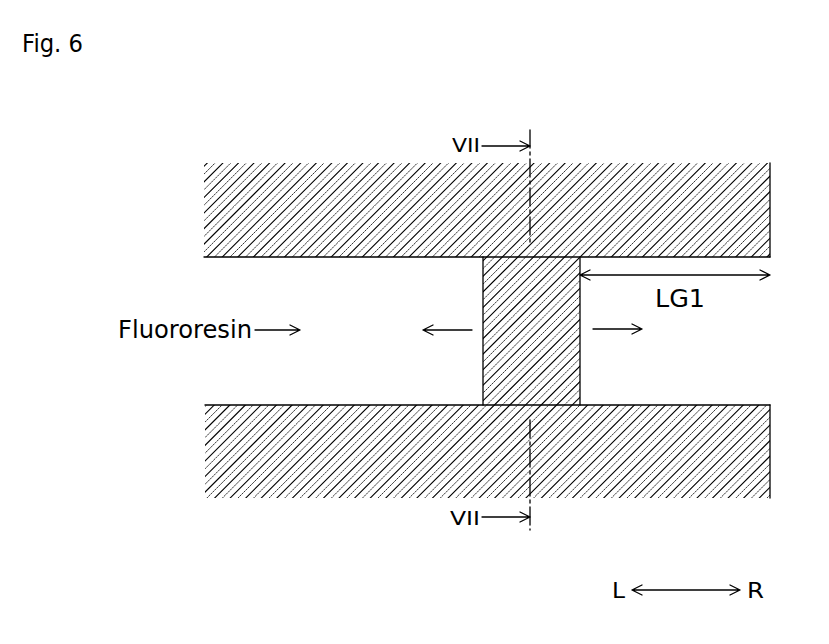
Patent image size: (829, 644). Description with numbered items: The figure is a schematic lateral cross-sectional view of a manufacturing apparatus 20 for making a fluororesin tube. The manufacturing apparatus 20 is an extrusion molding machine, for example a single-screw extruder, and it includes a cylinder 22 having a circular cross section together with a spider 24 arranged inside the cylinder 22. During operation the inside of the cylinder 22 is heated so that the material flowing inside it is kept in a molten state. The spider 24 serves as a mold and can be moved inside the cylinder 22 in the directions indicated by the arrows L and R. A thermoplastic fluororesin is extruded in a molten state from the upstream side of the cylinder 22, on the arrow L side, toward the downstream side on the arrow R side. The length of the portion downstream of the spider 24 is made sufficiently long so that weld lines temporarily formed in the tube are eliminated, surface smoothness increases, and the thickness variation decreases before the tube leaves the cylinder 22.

The manufacturing apparatus 20 is at (414, 372).
The cylinder 22 is at (313, 257).
The spider 24 is at (483, 366).